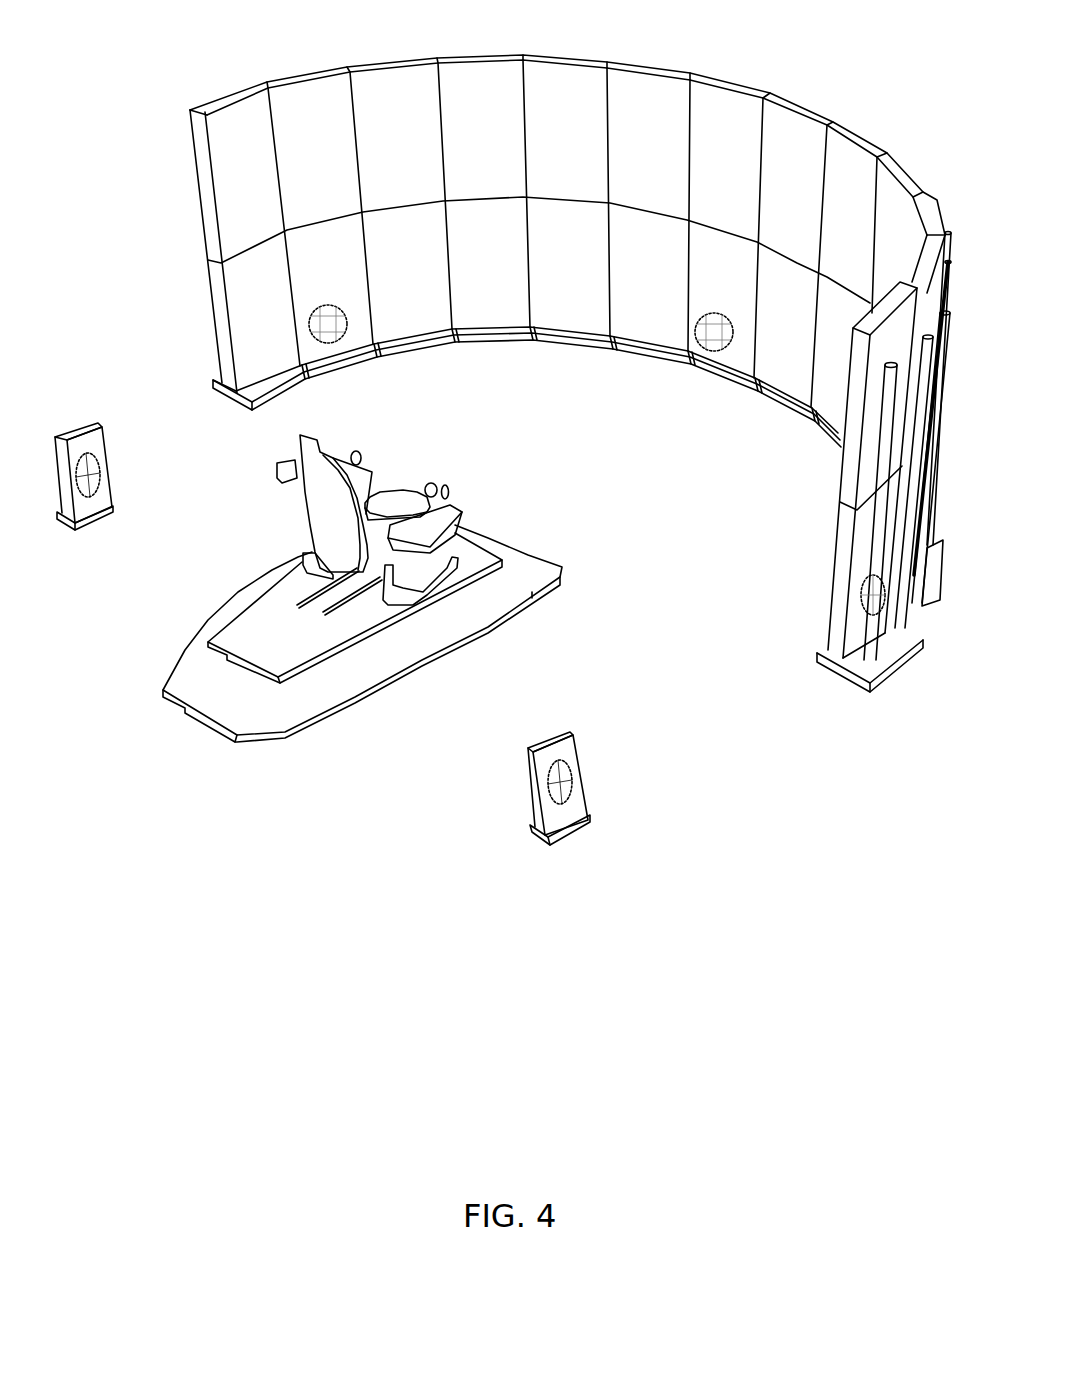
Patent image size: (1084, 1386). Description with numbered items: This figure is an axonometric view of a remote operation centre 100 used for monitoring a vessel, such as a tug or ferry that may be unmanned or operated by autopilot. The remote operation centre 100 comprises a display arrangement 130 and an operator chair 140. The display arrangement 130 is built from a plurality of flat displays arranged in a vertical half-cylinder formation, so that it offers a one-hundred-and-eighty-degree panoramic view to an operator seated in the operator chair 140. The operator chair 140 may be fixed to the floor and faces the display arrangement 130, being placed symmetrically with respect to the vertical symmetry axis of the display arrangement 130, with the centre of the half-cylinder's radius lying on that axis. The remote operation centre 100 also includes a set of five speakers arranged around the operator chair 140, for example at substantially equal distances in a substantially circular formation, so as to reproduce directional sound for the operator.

The remote operation centre 100 is at (131, 985).
The display arrangement 130 is at (317, 72).
The operator chair 140 is at (352, 625).